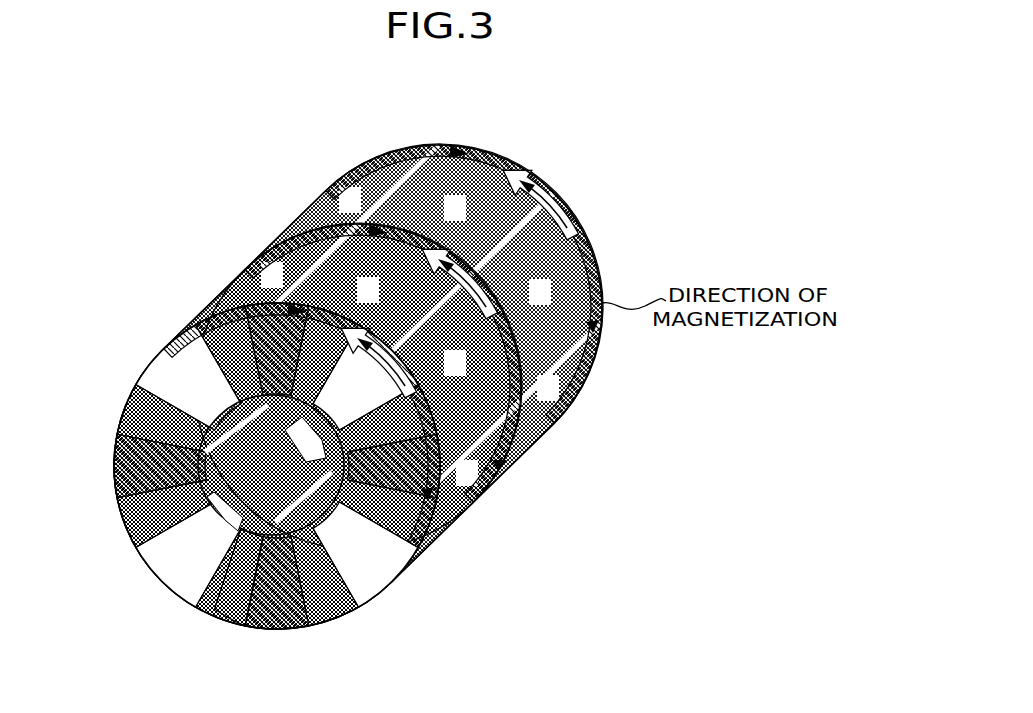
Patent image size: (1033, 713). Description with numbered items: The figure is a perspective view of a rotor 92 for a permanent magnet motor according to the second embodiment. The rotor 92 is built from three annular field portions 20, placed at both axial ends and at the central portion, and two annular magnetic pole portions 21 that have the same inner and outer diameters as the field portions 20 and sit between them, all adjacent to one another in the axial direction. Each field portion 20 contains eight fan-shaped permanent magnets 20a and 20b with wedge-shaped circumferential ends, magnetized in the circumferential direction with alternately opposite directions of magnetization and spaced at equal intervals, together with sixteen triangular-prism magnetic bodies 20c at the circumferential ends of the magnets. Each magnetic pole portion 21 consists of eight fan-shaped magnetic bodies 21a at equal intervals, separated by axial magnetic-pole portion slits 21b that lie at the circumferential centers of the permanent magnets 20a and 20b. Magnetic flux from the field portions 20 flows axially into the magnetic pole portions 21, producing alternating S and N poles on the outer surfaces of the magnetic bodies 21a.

The rotor 92 is at (383, 389).
The field portion 20 is at (358, 414).
The permanent magnet 20a is at (162, 563).
The permanent magnet 20b is at (272, 622).
The magnetic body 20c is at (212, 618).
The magnetic pole portion 21 is at (358, 387).
The fan-shaped magnetic body 21a is at (537, 413).
The magnetic-pole portion slit 21b is at (493, 467).